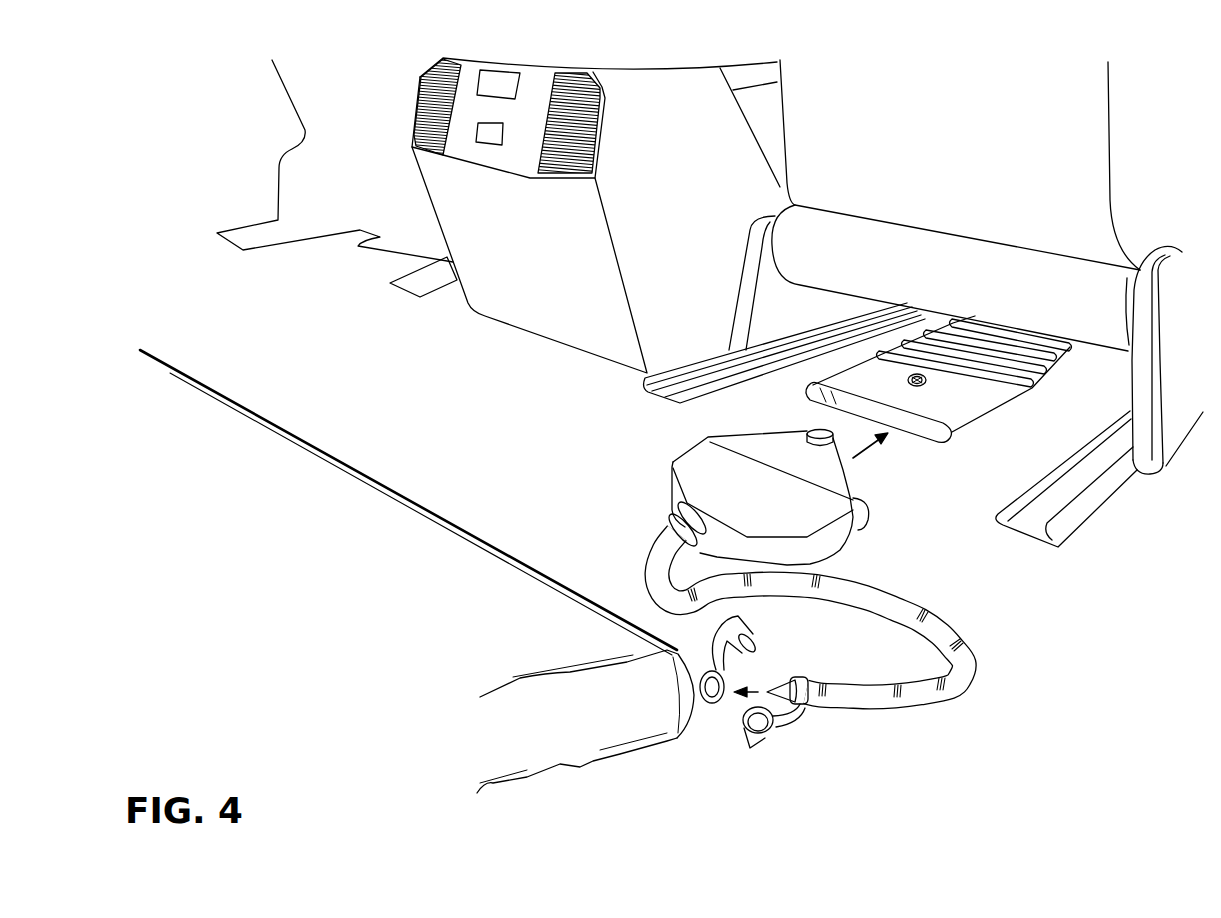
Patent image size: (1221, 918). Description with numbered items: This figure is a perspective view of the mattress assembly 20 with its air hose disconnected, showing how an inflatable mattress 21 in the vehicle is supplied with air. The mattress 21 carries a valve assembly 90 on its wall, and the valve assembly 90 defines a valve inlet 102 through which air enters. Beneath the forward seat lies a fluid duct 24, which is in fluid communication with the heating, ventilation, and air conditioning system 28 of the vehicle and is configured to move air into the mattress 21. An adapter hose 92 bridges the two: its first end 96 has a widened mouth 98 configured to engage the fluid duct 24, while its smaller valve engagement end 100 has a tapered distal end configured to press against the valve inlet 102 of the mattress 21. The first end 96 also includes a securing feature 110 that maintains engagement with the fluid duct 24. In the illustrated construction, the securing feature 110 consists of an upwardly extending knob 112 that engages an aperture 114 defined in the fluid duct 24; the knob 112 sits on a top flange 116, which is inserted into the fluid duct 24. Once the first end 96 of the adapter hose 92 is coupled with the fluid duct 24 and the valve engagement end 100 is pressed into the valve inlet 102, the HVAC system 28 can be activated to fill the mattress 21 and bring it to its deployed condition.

The mattress assembly 20 is at (1043, 613).
The mattress 21 is at (450, 600).
The fluid duct 24 is at (997, 400).
The heating, ventilation, and air conditioning (HVAC) system 28 is at (1062, 354).
The valve assembly 90 is at (693, 700).
The adapter hose 92 is at (880, 597).
The first end 96 is at (657, 523).
The widened mouth 98 is at (788, 480).
The valve engagement end 100 is at (777, 680).
The valve inlet 102 is at (713, 695).
The securing feature 110 is at (829, 483).
The knob 112 is at (806, 433).
The aperture 114 is at (912, 378).
The top flange 116 is at (840, 471).